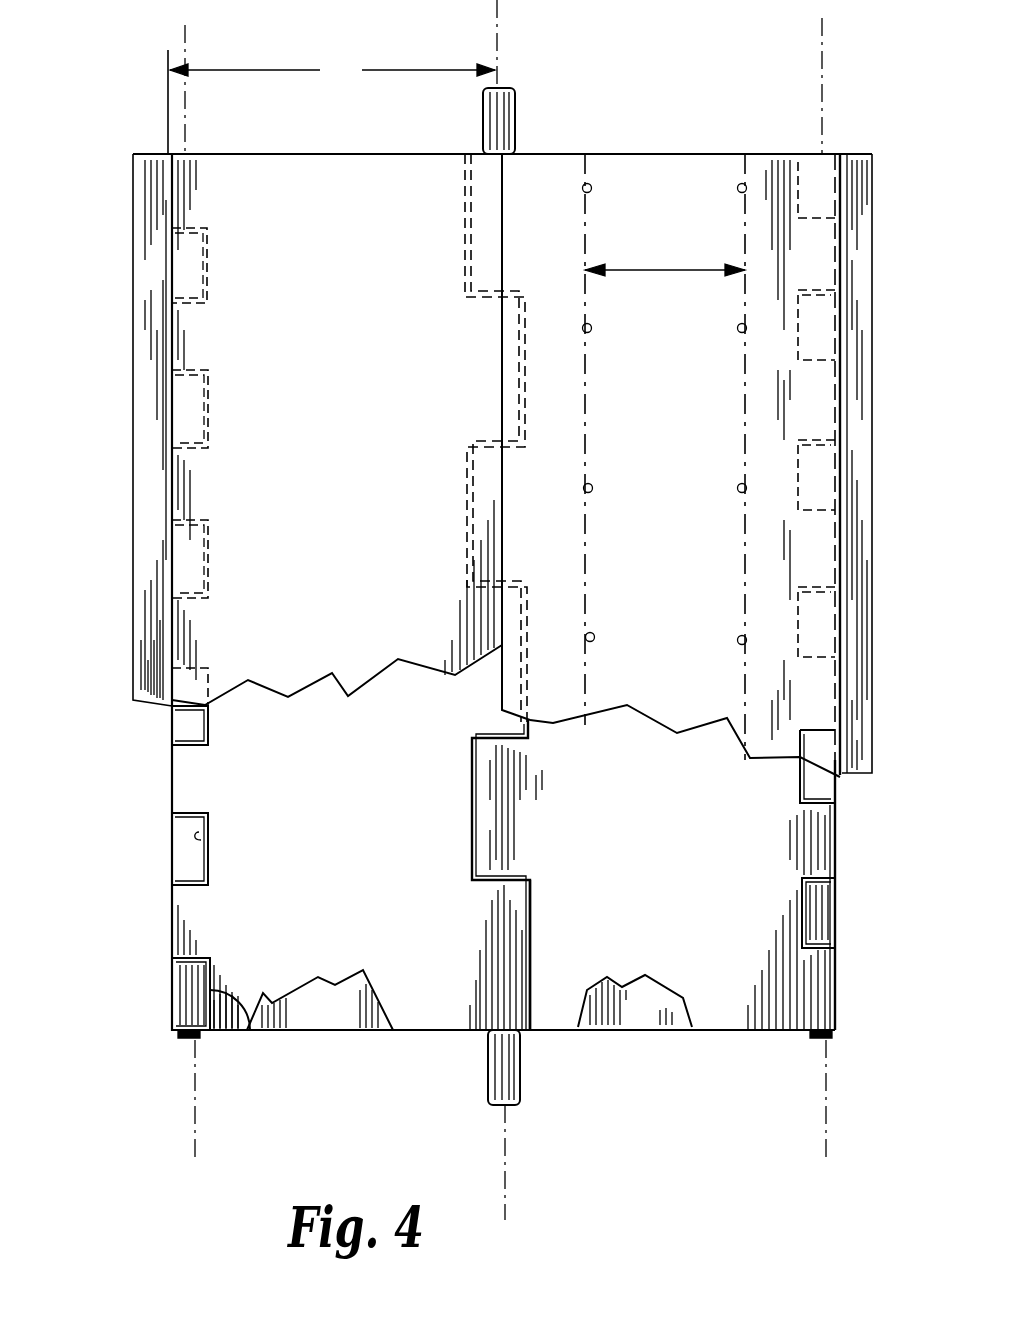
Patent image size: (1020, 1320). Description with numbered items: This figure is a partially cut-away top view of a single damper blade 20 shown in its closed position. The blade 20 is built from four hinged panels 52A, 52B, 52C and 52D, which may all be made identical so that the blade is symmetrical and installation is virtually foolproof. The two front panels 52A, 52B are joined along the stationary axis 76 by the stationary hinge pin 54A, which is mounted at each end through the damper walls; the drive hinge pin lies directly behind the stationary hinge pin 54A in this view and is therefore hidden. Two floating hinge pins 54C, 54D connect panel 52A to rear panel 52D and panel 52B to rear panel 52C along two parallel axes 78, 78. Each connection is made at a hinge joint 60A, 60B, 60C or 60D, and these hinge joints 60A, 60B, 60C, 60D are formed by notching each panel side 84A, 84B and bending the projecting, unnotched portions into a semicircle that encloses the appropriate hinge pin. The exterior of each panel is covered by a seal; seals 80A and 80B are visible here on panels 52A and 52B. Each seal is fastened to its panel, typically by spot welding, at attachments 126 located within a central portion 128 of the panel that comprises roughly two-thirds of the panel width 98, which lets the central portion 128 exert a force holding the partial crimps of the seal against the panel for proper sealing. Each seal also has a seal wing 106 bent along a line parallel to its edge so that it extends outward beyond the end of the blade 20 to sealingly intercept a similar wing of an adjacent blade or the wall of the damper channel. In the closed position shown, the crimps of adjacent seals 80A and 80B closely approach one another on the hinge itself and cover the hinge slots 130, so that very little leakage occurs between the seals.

The blade 20 is at (108, 120).
The panel 52A is at (366, 394).
The panel 52B is at (694, 379).
The panel 52C is at (335, 1012).
The panel 52D is at (650, 1005).
The stationary hinge pin 54A is at (517, 122).
The floating hinge pin 54C is at (182, 1040).
The floating hinge pin 54D is at (820, 1040).
The hinge joint 60A is at (533, 962).
The hinge joint 60B is at (472, 810).
The hinge joint 60C is at (242, 1028).
The hinge joint 60D is at (803, 912).
The stationary axis 76 is at (497, 35).
The parallel axis 78 is at (185, 47).
The seal 80A is at (202, 492).
The seal 80B is at (683, 173).
The panel side 84A is at (188, 770).
The panel side 84B is at (515, 947).
The panel width 98 is at (331, 102).
The seal wing 106 is at (150, 560).
The attachment 126 is at (595, 636).
The central portion 128 is at (674, 268).
The hinge slot 130 is at (205, 826).